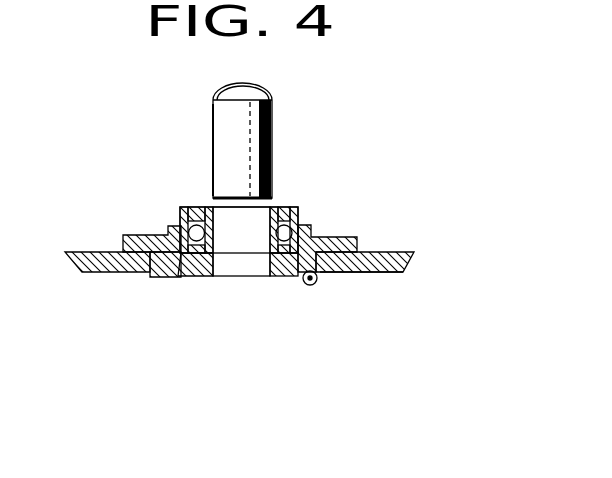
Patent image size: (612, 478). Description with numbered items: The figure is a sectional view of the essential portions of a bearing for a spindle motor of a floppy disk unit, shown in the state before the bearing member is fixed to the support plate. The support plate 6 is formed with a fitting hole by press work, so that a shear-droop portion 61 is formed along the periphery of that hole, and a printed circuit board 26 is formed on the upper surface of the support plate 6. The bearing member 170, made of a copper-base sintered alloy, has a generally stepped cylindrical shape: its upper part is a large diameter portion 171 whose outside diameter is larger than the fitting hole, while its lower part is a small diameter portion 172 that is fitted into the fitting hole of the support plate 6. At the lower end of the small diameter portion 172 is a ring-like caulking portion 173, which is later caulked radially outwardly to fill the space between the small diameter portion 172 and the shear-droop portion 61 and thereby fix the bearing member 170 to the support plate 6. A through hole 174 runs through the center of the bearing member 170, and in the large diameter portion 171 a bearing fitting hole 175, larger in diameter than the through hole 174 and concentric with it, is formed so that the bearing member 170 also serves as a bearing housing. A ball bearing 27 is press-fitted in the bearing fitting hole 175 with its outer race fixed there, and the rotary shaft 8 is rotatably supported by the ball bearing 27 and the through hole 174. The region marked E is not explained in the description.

The rotary shaft 8 is at (272, 120).
The bearing fitting hole 175 is at (212, 125).
The bearing member 170 is at (147, 235).
The shear-droop portion 61 is at (163, 277).
The small diameter portion 172 is at (138, 273).
The large diameter portion 171 is at (341, 237).
The printed circuit board 26 is at (393, 251).
The support plate 6 is at (385, 274).
The ball bearing 27 is at (291, 207).
The through hole 174 is at (255, 277).
The ring-like caulking portion 173 is at (165, 278).
The adhesive point E is at (313, 287).